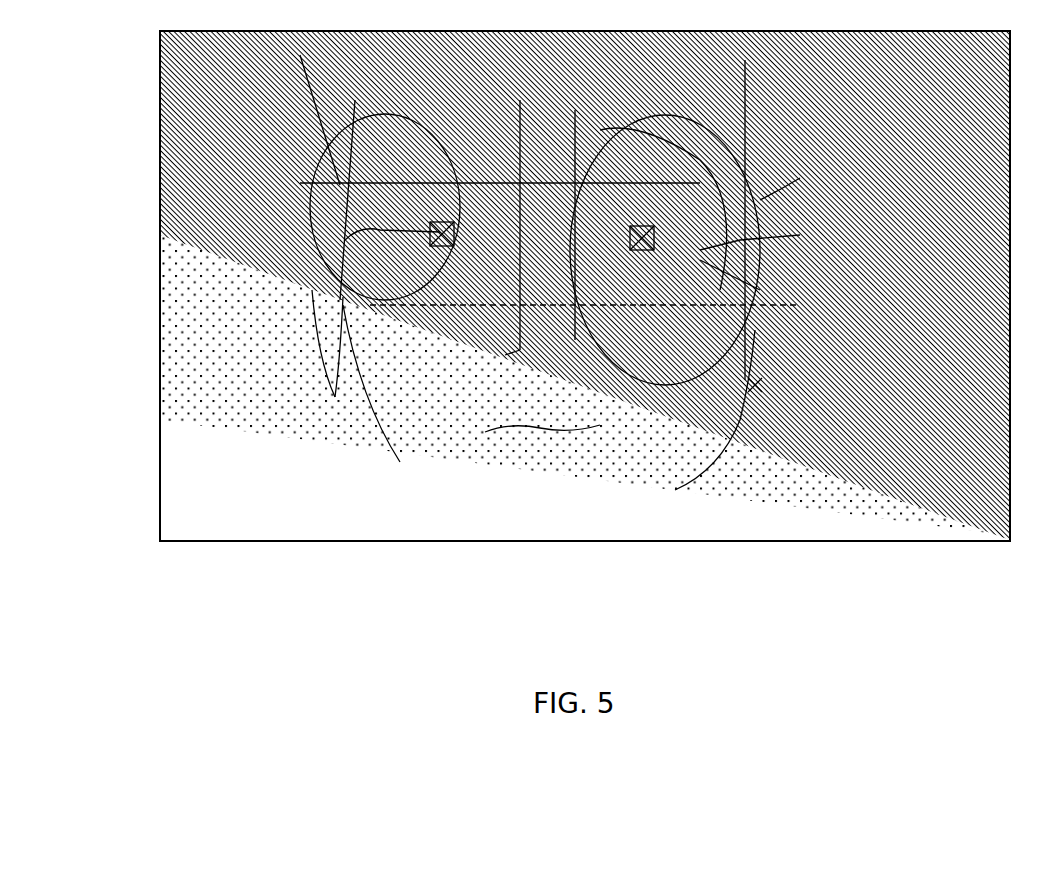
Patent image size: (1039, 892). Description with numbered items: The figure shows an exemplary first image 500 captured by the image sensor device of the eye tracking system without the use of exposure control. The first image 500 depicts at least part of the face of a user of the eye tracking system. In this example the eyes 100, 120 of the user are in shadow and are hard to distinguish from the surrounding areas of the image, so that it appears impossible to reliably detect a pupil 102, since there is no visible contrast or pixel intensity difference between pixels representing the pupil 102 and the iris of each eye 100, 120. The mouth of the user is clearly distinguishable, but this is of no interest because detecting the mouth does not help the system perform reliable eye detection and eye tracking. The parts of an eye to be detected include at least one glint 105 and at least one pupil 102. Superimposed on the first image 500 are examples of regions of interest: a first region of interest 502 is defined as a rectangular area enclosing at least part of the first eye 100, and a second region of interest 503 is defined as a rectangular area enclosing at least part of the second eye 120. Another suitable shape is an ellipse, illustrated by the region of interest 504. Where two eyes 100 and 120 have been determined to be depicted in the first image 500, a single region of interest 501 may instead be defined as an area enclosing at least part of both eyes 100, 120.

The first image 500 is at (158, 287).
The eye 100 is at (450, 203).
The glint 105 is at (332, 176).
The eye 120 is at (647, 203).
The region of interest 501 is at (800, 178).
The first region of interest 502 is at (345, 240).
The second region of interest 503 is at (760, 290).
The region of interest 504 is at (800, 235).
The pupil 102 is at (345, 312).